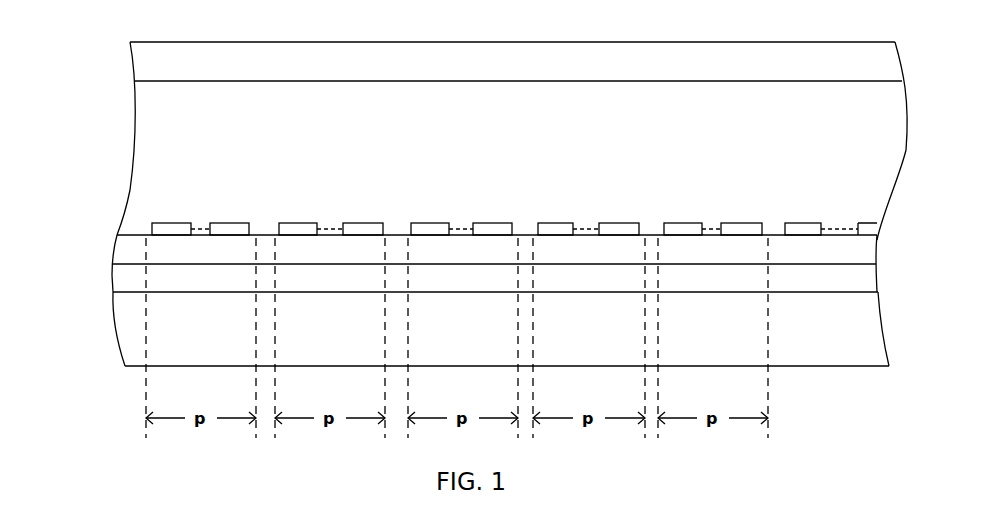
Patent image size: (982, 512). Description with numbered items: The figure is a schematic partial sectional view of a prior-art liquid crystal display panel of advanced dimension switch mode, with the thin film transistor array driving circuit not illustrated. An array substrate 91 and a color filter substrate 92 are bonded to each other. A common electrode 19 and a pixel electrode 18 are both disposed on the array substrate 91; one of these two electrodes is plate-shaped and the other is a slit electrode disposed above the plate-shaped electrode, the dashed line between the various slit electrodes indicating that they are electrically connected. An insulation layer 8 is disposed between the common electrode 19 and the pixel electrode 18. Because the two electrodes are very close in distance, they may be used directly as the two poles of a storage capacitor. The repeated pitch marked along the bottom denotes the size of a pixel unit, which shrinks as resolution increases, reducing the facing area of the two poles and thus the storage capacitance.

The color filter substrate 92 is at (152, 63).
The insulation layer 8 is at (137, 250).
The common electrode 19 is at (322, 280).
The array substrate 91 is at (135, 340).
The pixel electrode 18 is at (232, 228).